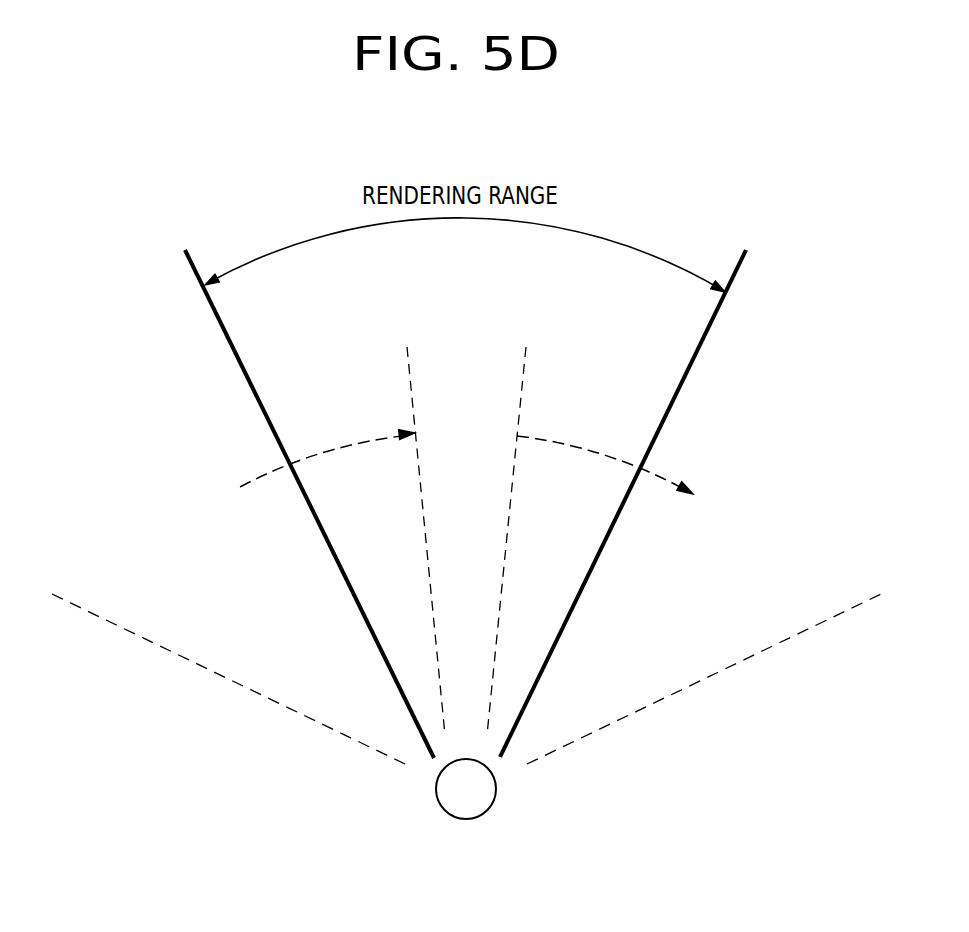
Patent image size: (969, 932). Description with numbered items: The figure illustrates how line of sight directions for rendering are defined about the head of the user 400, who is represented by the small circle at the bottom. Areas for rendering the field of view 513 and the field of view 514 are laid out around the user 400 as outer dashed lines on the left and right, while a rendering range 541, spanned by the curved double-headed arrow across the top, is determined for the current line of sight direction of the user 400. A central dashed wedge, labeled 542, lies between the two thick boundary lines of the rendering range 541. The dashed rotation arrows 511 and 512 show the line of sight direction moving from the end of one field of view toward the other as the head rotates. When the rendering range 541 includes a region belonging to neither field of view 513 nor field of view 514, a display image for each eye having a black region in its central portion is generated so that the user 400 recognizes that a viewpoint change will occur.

The rendering range 541 is at (675, 258).
The line-of-sight direction 542 is at (460, 385).
The arrow 511 is at (378, 438).
The arrow 512 is at (548, 437).
The field of view 513 is at (285, 688).
The field of view 514 is at (694, 669).
The user 400 is at (488, 786).